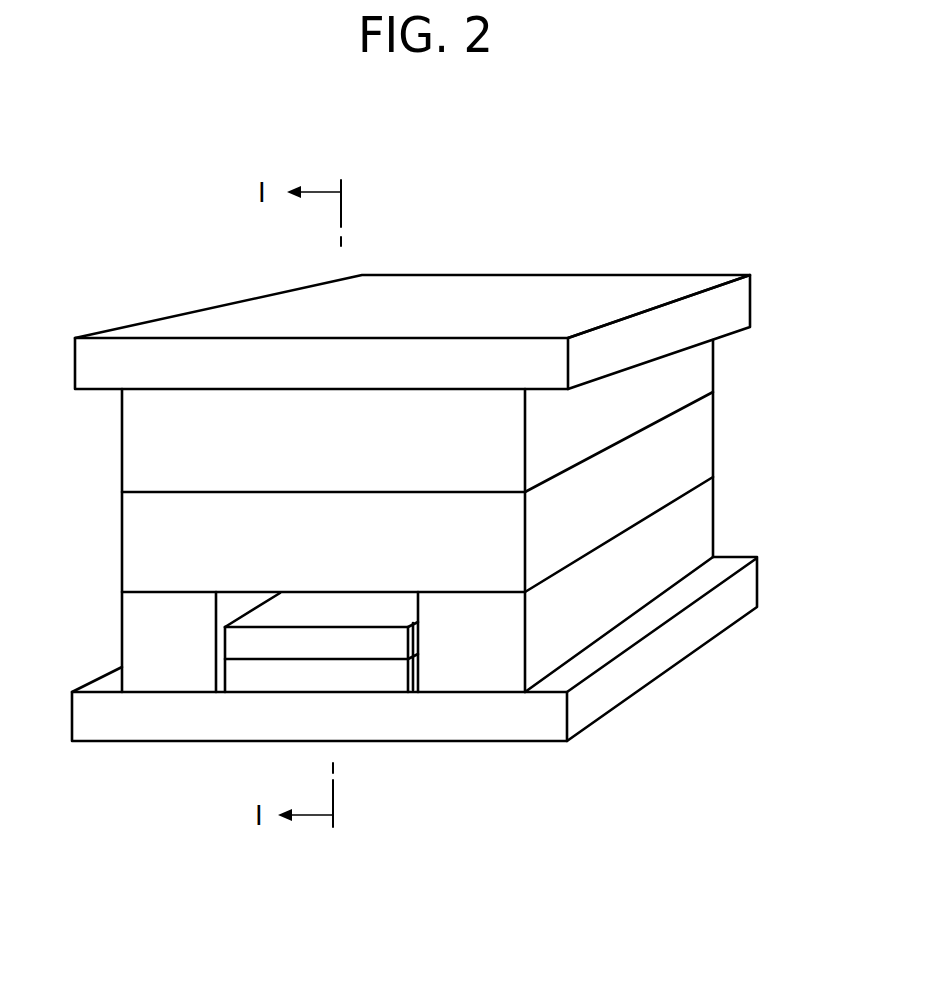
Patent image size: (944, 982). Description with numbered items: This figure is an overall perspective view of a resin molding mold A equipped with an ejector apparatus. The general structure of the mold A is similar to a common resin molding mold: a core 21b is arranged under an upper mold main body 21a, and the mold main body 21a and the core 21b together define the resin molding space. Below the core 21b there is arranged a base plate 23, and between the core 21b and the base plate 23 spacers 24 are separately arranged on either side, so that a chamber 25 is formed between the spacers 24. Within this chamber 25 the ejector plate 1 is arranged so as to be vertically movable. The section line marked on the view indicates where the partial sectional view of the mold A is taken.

The resin molding mold A is at (587, 236).
The ejector plate 1 is at (373, 678).
The upper mold main body 21a is at (698, 374).
The core 21b is at (697, 439).
The base plate 23 is at (123, 718).
The spacers 24 is at (697, 523).
The chamber 25 is at (223, 607).